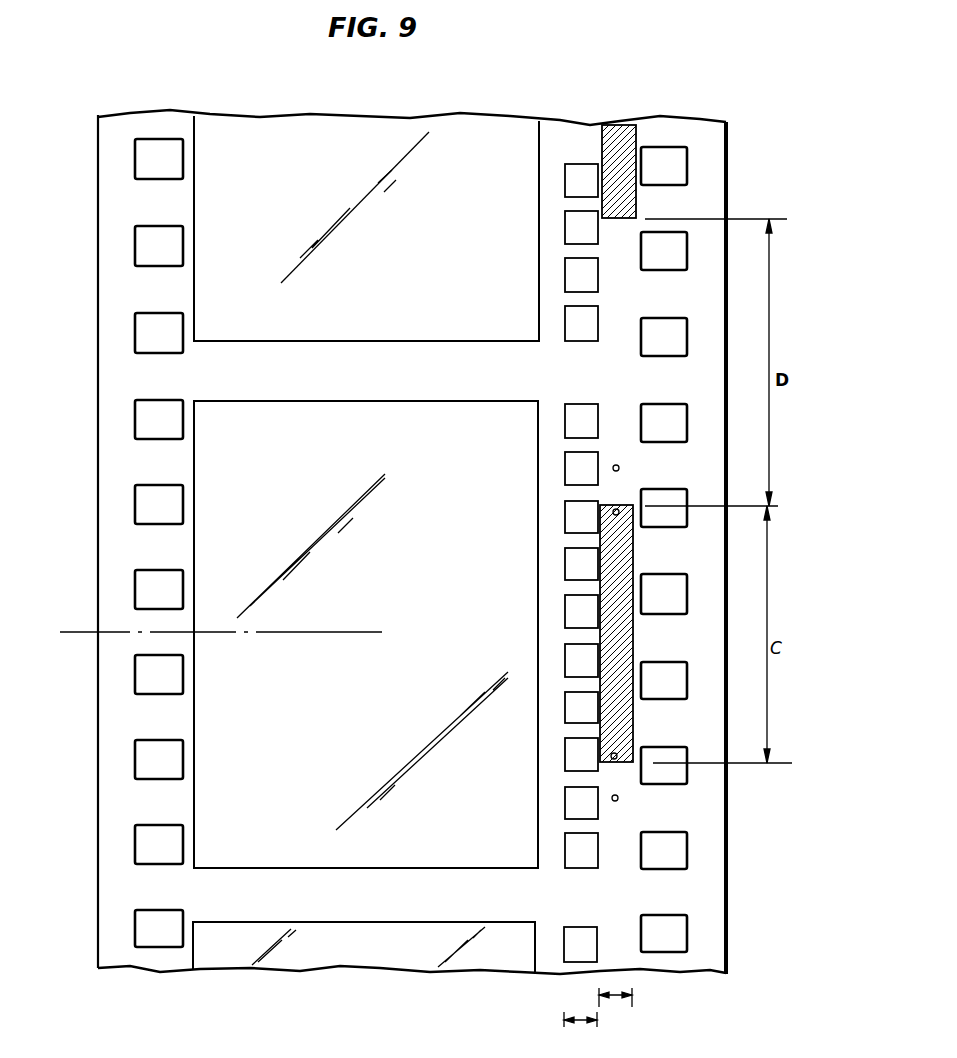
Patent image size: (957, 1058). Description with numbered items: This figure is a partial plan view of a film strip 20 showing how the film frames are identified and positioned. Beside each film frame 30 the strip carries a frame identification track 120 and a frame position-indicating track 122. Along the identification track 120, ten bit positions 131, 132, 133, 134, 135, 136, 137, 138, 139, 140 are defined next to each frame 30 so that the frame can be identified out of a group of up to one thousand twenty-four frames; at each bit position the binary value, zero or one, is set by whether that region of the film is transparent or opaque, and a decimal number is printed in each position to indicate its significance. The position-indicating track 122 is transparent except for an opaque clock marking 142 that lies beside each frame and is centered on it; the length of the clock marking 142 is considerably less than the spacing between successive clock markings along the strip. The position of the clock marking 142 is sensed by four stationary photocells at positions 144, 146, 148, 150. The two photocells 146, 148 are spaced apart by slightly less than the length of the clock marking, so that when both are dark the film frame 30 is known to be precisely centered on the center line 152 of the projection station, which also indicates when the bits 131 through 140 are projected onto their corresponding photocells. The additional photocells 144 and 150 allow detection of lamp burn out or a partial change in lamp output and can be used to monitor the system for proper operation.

The film strip 20 is at (98, 775).
The film frame 30 is at (376, 666).
The frame identification track 120 is at (574, 1022).
The frame position-indicating track 122 is at (620, 1000).
The bit position 131 is at (562, 421).
The bit position 132 is at (562, 470).
The bit position 133 is at (562, 518).
The bit position 134 is at (562, 566).
The bit position 135 is at (562, 612).
The bit position 136 is at (562, 661).
The bit position 137 is at (562, 708).
The bit position 138 is at (562, 753).
The bit position 139 is at (562, 801).
The bit position 140 is at (562, 850).
The clock marking 142 is at (624, 638).
The photocell position 144 is at (619, 467).
The photocell position 146 is at (618, 514).
The photocell position 148 is at (617, 753).
The photocell position 150 is at (618, 800).
The center line 152 is at (60, 632).